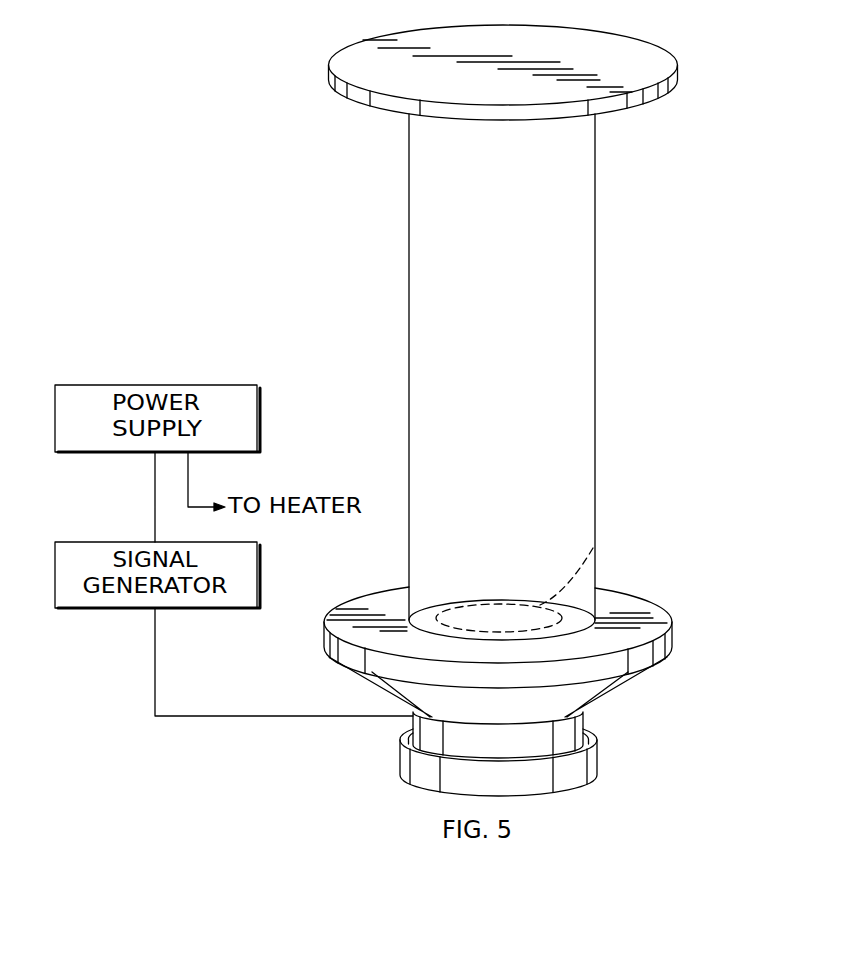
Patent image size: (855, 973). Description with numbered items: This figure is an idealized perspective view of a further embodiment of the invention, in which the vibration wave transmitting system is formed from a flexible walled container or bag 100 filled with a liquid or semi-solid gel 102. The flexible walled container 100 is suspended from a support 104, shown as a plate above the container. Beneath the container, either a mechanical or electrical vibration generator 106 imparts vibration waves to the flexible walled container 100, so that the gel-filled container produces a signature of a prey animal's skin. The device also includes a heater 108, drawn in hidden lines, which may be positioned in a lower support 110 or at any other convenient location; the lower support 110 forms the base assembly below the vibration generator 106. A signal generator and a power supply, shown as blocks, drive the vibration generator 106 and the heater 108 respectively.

The flexible walled container 100 is at (595, 281).
The liquid or semi-solid gel 102 is at (575, 410).
The support 104 is at (678, 72).
The vibration generator 106 is at (672, 618).
The heater 108 is at (593, 548).
The lower support 110 is at (678, 587).